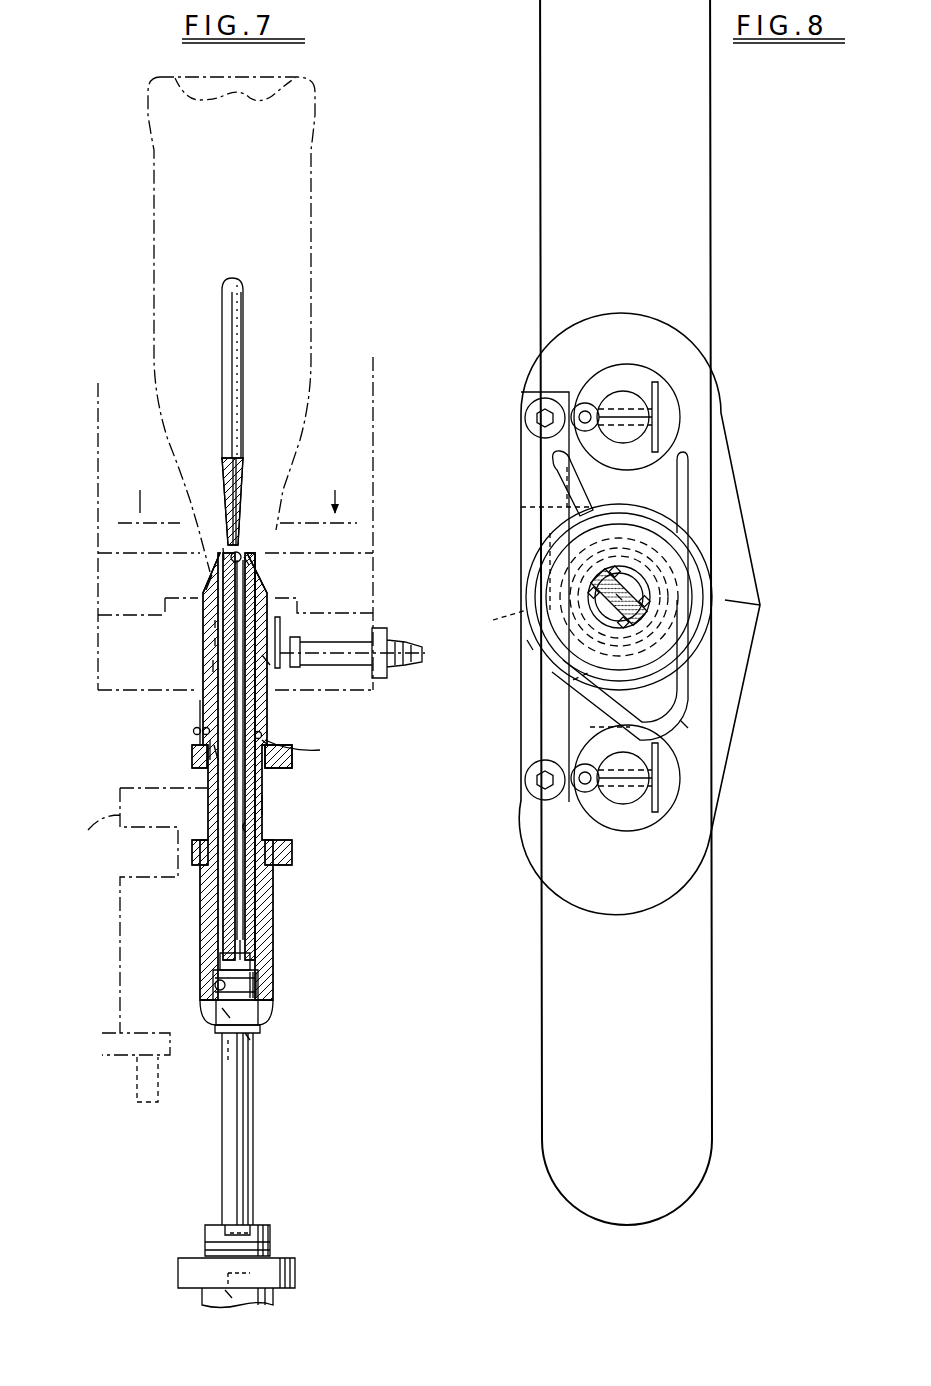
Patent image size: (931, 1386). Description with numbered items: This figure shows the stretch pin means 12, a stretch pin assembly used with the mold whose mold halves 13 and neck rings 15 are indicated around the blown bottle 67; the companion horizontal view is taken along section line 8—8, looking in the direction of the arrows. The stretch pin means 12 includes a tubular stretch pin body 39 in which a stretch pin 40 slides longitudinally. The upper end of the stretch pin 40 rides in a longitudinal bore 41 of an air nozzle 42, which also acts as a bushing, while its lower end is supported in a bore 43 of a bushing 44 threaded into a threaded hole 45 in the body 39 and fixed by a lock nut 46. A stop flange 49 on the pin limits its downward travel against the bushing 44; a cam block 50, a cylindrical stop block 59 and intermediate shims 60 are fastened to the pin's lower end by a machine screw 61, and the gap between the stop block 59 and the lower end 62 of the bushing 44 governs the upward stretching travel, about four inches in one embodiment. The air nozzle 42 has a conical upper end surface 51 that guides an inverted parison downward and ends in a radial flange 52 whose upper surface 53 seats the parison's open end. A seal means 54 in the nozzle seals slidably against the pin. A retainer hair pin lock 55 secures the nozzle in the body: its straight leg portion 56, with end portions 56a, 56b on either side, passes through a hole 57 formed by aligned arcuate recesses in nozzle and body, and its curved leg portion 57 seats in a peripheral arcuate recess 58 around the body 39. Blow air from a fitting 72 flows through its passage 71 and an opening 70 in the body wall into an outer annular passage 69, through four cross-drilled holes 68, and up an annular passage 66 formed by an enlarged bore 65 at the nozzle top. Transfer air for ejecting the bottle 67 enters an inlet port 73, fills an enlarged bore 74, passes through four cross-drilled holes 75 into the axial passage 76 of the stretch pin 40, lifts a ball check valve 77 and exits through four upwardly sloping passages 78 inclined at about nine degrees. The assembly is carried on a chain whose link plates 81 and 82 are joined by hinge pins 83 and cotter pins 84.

In FIG. 7, the bottle 67 is at (316, 210).
In FIG. 7, the mold halves 13 is at (96, 500).
In FIG. 7, the neck rings 15 is at (96, 588).
In FIG. 7, the section line 8 is at (236, 490).
In FIG. 7, the upwardly sloping passages 78 is at (226, 506).
In FIG. 8, the upwardly sloping passages 78 is at (648, 592).
In FIG. 7, the ball check valve 77 is at (240, 554).
In FIG. 7, the stretch pin body 39 is at (266, 906).
In FIG. 8, the stretch pin body 39 is at (713, 617).
In FIG. 7, the air nozzle 42 is at (262, 703).
In FIG. 7, the axial passage 76 is at (238, 905).
In FIG. 7, the cross-drilled holes 75 is at (248, 932).
In FIG. 7, the chain link plate 82 is at (283, 768).
In FIG. 8, the chain link plate 82 is at (710, 808).
In FIG. 7, the seal means 54 is at (283, 754).
In FIG. 7, the transfer air inlet port 73 is at (265, 805).
In FIG. 7, the enlarged bore 74 is at (248, 828).
In FIG. 7, the radial flange 52 is at (212, 592).
In FIG. 7, the upper surface 53 is at (268, 585).
In FIG. 7, the conical upper end surface 51 is at (250, 560).
In FIG. 7, the annular passage 66 is at (226, 548).
In FIG. 7, the enlarged bore 65 is at (216, 623).
In FIG. 7, the cross-drilled holes 68 is at (216, 640).
In FIG. 8, the cross-drilled holes 68 is at (593, 615).
In FIG. 7, the second outer annular passage 69 is at (214, 664).
In FIG. 8, the second outer annular passage 69 is at (573, 680).
In FIG. 7, the opening 70 is at (270, 662).
In FIG. 7, the passage 71 is at (278, 655).
In FIG. 7, the fitting 72 is at (413, 645).
In FIG. 7, the stretch pin means 12 is at (199, 716).
In FIG. 8, the stretch pin means 12 is at (530, 646).
In FIG. 7, the peripheral arcuate recess 58 is at (194, 731).
In FIG. 7, the curved leg portion 57 is at (211, 742).
In FIG. 8, the curved leg portion 57 is at (550, 548).
In FIG. 7, the wire end 56a is at (216, 752).
In FIG. 7, the wire end 56b is at (268, 741).
In FIG. 7, the straight leg portion 56 is at (270, 746).
In FIG. 8, the straight leg portion 56 is at (683, 690).
In FIG. 7, the longitudinal bore 41 is at (262, 735).
In FIG. 7, the stop flange 49 is at (256, 963).
In FIG. 7, the bushing 44 is at (260, 990).
In FIG. 7, the threaded hole 45 is at (214, 985).
In FIG. 7, the lock nut 46 is at (270, 1012).
In FIG. 7, the lower end 62 is at (255, 1035).
In FIG. 7, the stretch pin 40 is at (260, 1121).
In FIG. 8, the stretch pin 40 is at (628, 588).
In FIG. 7, the bore 43 is at (226, 1050).
In FIG. 7, the cylindrical block 59 is at (272, 1236).
In FIG. 7, the shims 60 is at (272, 1250).
In FIG. 7, the cam block 50 is at (297, 1273).
In FIG. 7, the machine screw 61 is at (200, 1308).
In FIG. 8, the chain link plate 81 is at (692, 284).
In FIG. 8, the hinge pins 83 is at (626, 398).
In FIG. 8, the cotter pins 84 is at (660, 427).
In FIG. 8, the retainer hair pin lock 55 is at (690, 729).